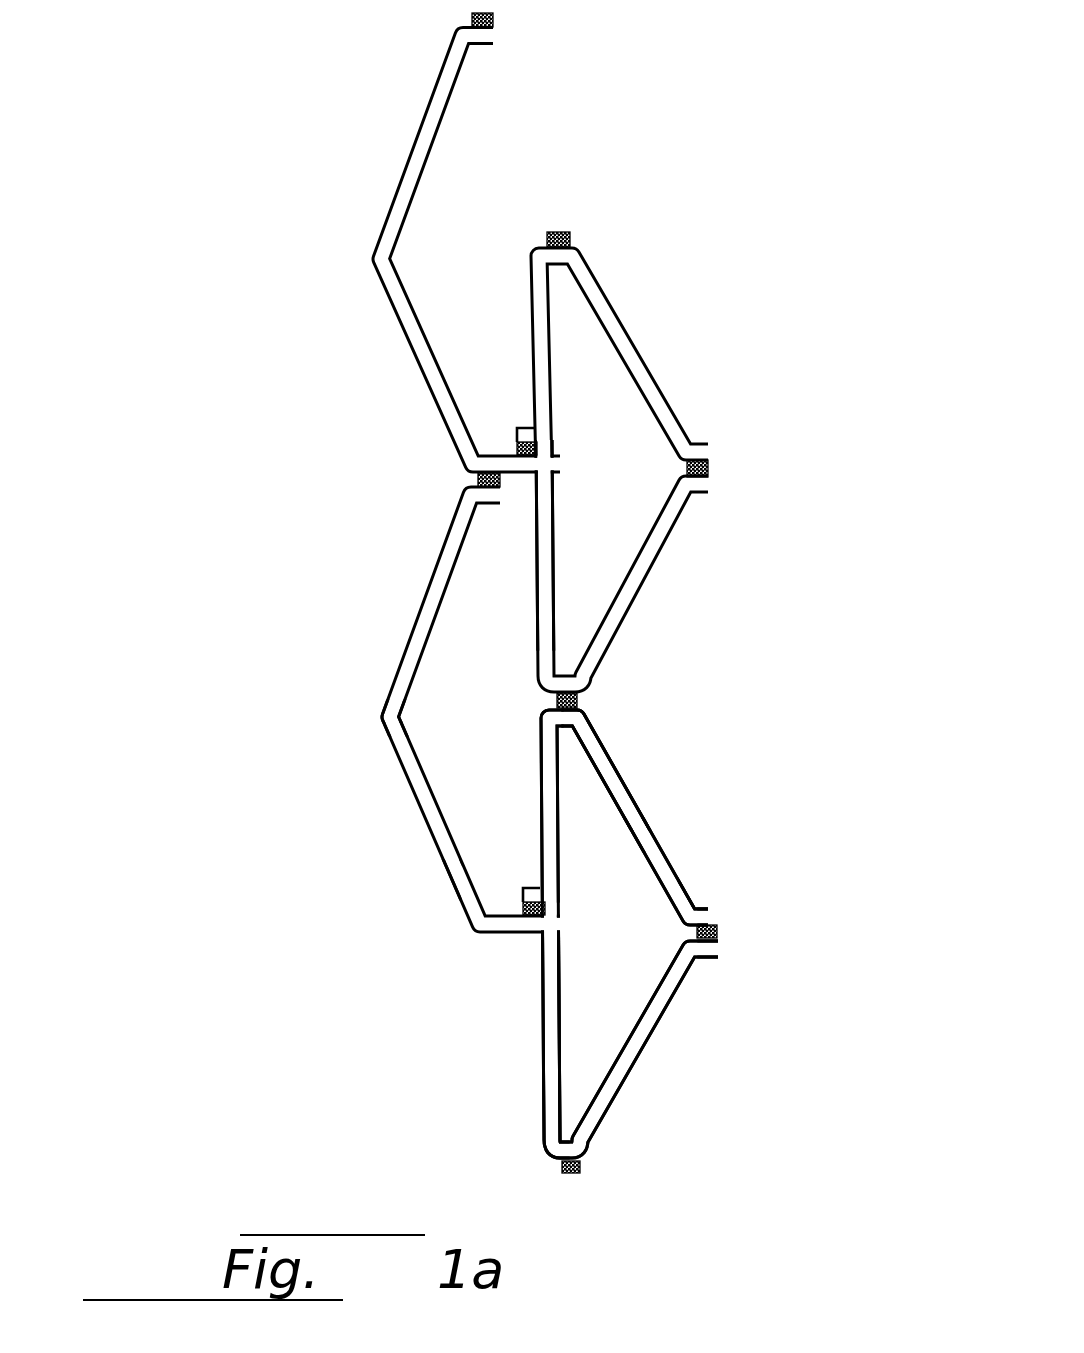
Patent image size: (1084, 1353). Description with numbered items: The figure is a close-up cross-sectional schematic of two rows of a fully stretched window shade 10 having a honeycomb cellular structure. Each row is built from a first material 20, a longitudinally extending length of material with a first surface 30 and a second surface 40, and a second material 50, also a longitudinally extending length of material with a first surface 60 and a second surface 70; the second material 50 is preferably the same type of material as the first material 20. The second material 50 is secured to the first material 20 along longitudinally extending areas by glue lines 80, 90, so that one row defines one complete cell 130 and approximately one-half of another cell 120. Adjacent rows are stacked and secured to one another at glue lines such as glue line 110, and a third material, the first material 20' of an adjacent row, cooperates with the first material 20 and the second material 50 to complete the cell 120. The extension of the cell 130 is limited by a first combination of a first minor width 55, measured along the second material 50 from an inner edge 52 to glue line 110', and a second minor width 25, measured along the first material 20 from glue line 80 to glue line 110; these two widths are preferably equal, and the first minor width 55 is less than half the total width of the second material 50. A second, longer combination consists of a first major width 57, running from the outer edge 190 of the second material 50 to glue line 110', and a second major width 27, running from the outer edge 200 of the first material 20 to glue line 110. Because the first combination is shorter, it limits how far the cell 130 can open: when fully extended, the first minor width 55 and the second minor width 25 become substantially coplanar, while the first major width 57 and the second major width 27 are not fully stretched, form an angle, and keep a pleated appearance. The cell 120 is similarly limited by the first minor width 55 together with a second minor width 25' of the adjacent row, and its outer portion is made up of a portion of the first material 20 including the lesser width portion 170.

The window shade 10 is at (749, 155).
The first material of an adjacent row 20' is at (427, 250).
The first material 20 is at (431, 830).
The lesser width portion 170 is at (417, 608).
The cell 120 is at (496, 624).
The first surface 30 is at (415, 731).
The first minor width 55 is at (540, 760).
The inner edge 52 is at (527, 888).
The second surface 40 is at (441, 877).
The second minor width of an adjacent row 25' is at (584, 545).
The glue line 110' is at (643, 682).
The first major width 57 is at (640, 803).
The second material 50 is at (667, 850).
The second surface 70 is at (633, 833).
The first surface 60 is at (694, 894).
The glue line 80 is at (546, 908).
The outer edge 190 is at (721, 913).
The glue line 90 is at (720, 932).
The outer edge 200 is at (724, 943).
The cell 130 is at (632, 970).
The second minor width 25 is at (581, 1040).
The second major width 27 is at (650, 1052).
The glue line 110 is at (645, 1196).